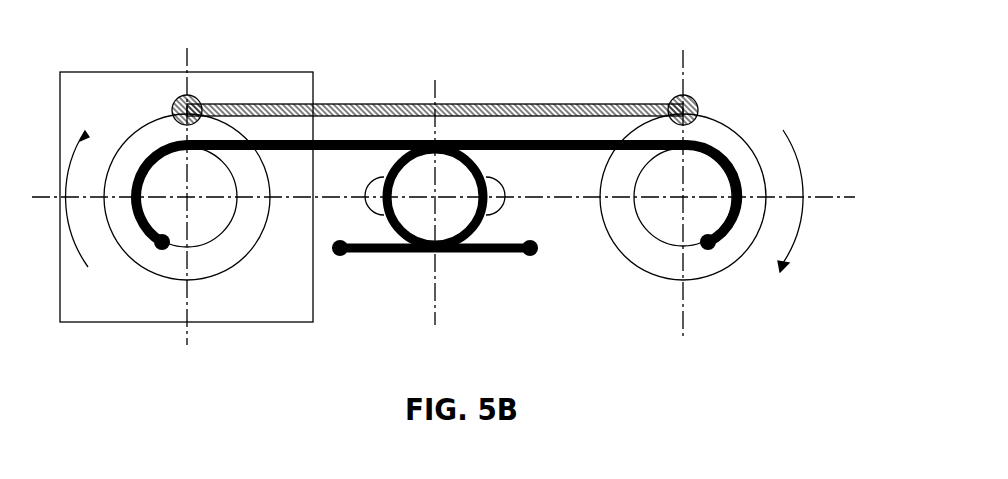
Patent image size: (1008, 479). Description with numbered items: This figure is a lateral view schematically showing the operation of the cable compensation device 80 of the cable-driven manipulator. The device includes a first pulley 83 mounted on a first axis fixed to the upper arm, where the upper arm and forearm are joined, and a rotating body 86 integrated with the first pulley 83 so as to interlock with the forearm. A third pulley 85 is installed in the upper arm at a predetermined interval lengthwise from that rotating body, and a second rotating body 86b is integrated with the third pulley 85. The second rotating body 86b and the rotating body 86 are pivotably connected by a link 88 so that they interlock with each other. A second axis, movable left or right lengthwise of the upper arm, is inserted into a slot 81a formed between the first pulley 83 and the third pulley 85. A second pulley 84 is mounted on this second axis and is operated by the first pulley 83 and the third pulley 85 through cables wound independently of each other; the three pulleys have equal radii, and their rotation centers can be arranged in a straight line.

The cable compensation device 80 is at (598, 92).
The slot 81a is at (492, 207).
The first pulley 83 is at (153, 213).
The second pulley 84 is at (460, 163).
The third pulley 85 is at (733, 173).
The left rotor 86 is at (140, 140).
The second rotating body 86b is at (737, 130).
The link 88 is at (356, 110).